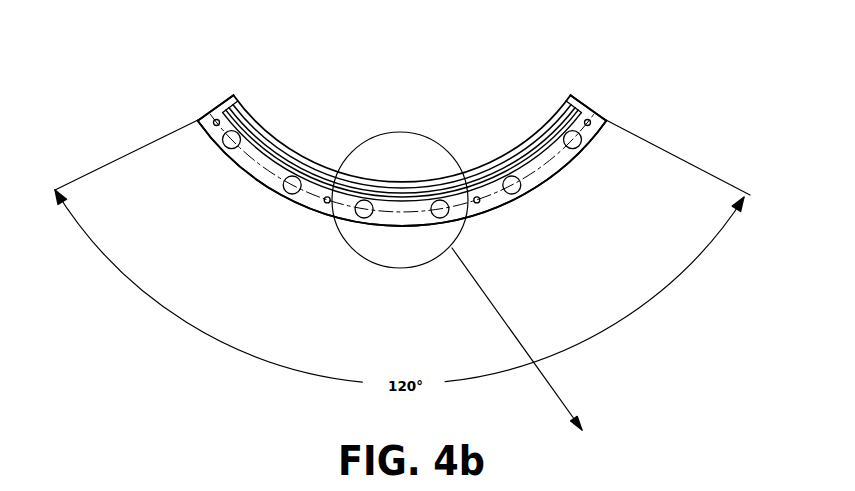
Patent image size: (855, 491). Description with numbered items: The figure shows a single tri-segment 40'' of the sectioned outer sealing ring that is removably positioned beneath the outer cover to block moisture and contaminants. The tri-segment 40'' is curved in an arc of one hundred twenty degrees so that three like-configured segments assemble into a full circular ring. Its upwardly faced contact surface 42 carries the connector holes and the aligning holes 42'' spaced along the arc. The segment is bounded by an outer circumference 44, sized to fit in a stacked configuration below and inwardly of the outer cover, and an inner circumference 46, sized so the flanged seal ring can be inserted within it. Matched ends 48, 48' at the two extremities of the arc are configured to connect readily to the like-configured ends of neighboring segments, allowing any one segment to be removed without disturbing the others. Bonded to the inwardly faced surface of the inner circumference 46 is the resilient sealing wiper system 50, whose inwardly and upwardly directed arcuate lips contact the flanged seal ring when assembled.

The tri-segment 40'' is at (462, 181).
The contact surface 42 is at (401, 198).
The aligning holes 42'' is at (402, 125).
The outer circumference 44 is at (251, 177).
The inner circumference 46 is at (255, 152).
The matched end 48 is at (625, 94).
The matched end 48' is at (195, 84).
The sealing wiper system 50 is at (522, 147).